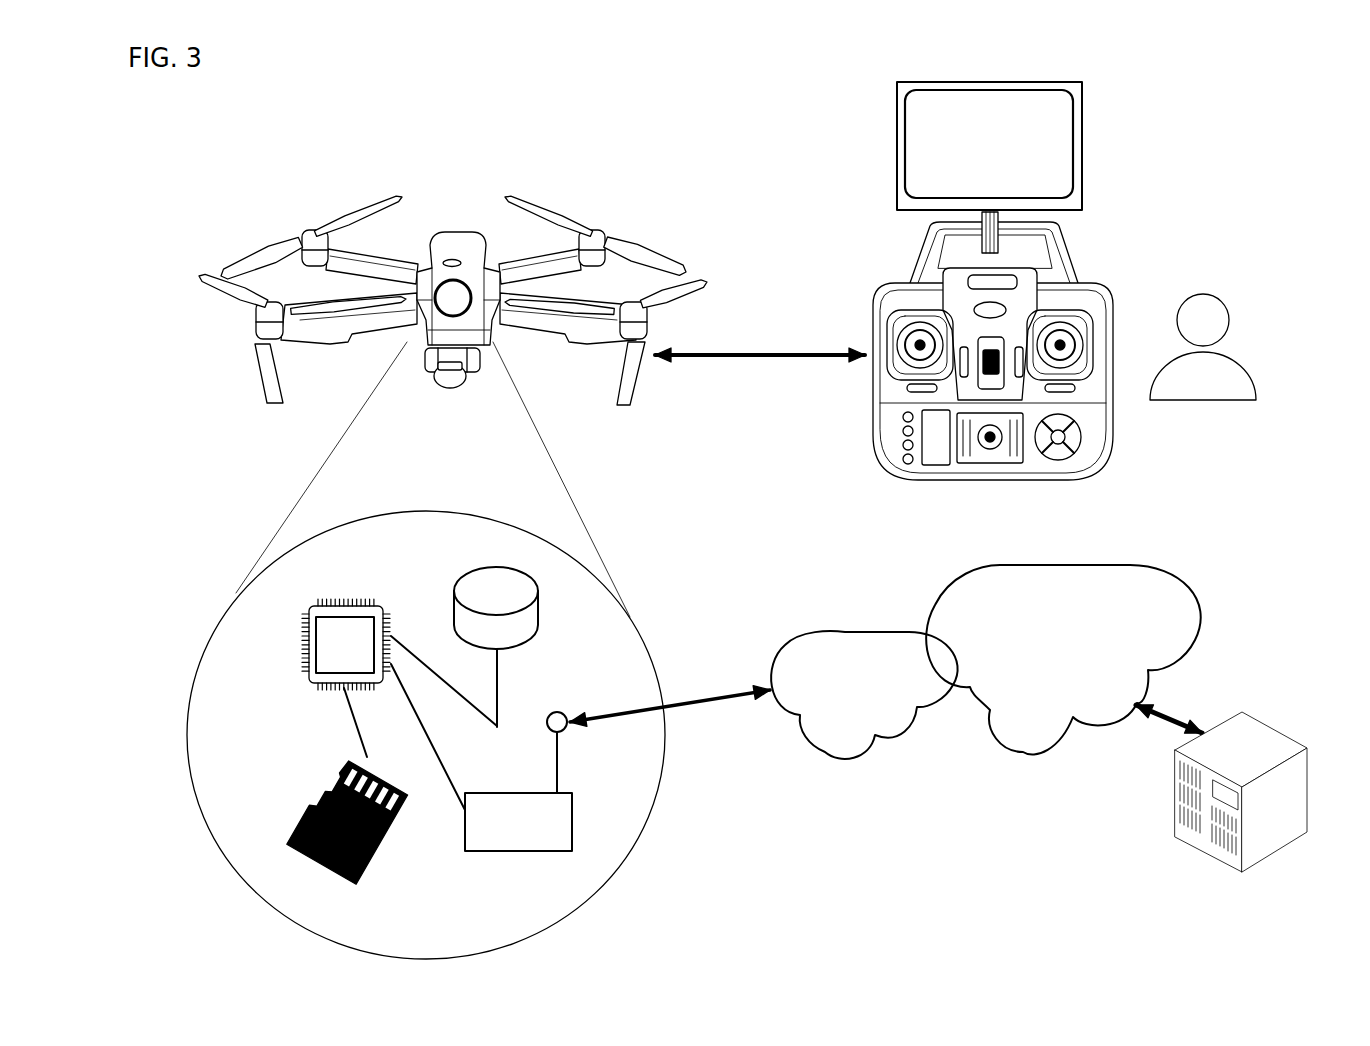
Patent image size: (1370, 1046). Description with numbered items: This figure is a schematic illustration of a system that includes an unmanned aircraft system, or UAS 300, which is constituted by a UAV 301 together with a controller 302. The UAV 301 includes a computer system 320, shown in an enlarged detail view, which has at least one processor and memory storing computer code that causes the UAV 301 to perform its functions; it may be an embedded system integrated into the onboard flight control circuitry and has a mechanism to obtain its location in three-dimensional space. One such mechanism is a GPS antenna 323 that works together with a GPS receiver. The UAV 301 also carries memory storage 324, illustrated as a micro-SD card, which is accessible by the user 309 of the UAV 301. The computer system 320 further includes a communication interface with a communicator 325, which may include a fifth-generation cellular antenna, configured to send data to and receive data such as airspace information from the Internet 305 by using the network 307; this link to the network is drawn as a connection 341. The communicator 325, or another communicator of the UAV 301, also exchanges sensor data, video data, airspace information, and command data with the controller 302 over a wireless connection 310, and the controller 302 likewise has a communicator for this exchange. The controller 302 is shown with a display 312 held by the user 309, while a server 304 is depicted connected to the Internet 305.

The UAS 300 is at (625, 406).
The UAV 301 is at (258, 367).
The controller 302 is at (870, 395).
The server 304 is at (1178, 782).
The Internet 305 is at (1063, 660).
The network 307 is at (864, 695).
The user 309 is at (1200, 385).
The wireless connection 310 is at (776, 358).
The display 312 is at (1085, 152).
The computer system 320 is at (222, 612).
The GPS antenna 323 is at (538, 614).
The memory storage 324 is at (288, 848).
The communicator 325 is at (518, 781).
The network communication link 341 is at (690, 705).